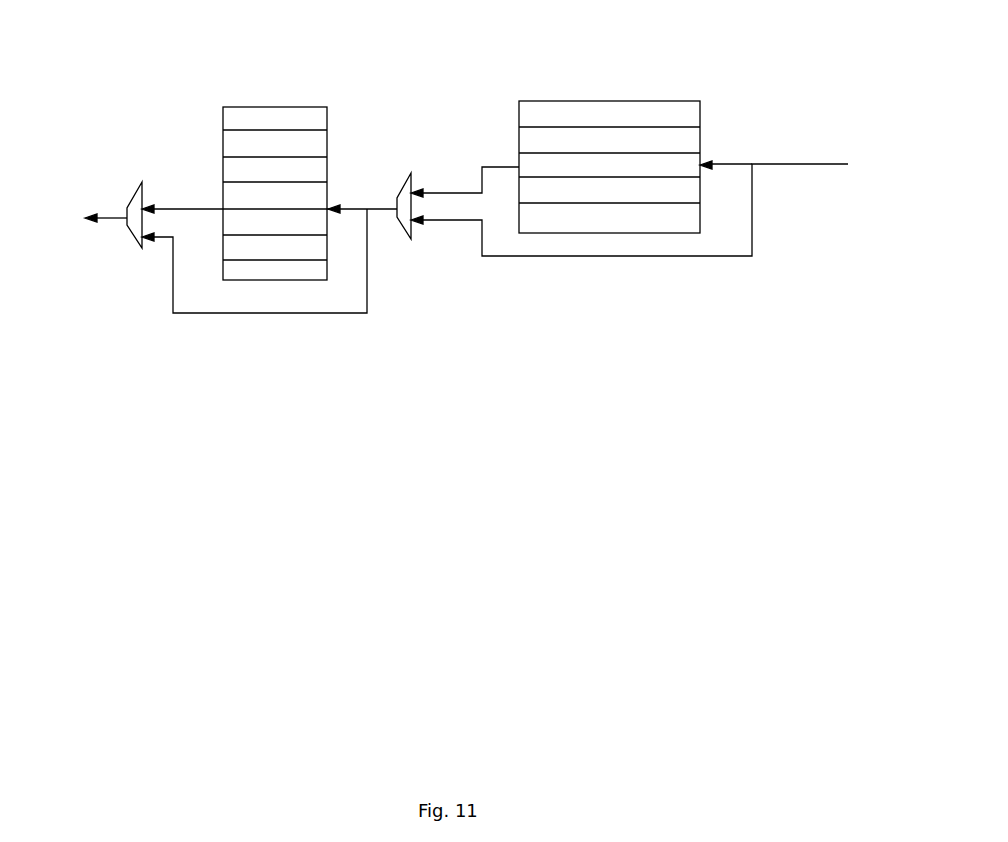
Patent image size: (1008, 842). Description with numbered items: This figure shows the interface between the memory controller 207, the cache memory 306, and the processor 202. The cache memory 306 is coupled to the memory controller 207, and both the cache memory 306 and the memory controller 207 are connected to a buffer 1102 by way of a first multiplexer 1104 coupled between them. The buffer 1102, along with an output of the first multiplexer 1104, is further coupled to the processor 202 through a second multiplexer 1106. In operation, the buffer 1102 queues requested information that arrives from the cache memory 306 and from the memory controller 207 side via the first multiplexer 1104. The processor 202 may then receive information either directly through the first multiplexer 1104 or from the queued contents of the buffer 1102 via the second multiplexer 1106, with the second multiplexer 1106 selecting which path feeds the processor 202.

The buffer 1102 is at (327, 107).
The cache memory 306 is at (699, 101).
The second multiplexer 1106 is at (131, 248).
The first multiplexer 1104 is at (404, 240).
The processor 202 is at (60, 268).
The memory controller 207 is at (848, 90).